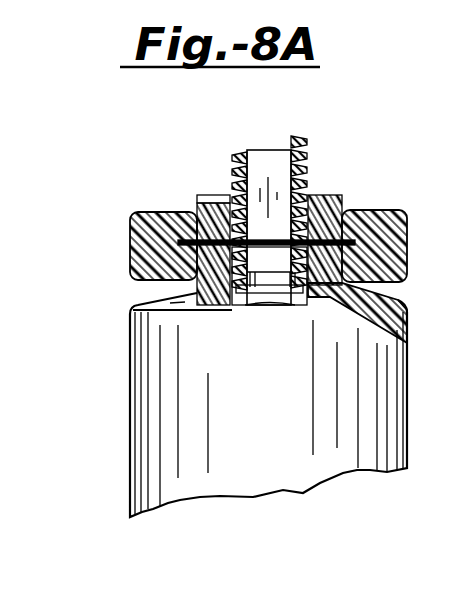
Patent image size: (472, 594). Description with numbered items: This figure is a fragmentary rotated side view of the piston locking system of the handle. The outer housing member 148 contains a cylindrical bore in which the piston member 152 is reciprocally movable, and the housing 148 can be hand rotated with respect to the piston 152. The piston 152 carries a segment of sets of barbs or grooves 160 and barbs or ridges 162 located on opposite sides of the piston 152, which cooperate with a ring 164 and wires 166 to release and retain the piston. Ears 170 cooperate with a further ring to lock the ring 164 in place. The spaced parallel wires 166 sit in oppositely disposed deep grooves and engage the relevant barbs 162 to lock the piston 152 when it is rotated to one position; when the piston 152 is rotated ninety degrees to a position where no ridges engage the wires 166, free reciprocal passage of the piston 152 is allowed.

The outer housing member 148 is at (130, 438).
The piston member 152 is at (263, 150).
The barbs or grooves 160 is at (237, 170).
The barbs or ridges 162 is at (228, 192).
The ring 164 is at (364, 210).
The wires 166 is at (128, 208).
The ears 170 is at (202, 202).